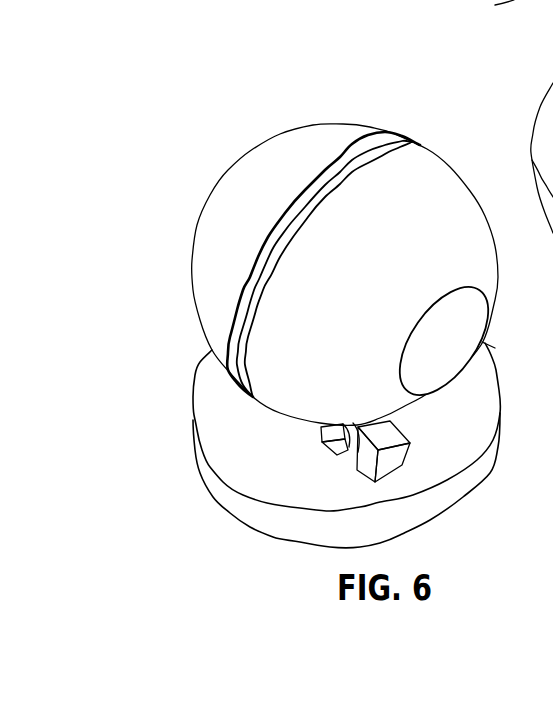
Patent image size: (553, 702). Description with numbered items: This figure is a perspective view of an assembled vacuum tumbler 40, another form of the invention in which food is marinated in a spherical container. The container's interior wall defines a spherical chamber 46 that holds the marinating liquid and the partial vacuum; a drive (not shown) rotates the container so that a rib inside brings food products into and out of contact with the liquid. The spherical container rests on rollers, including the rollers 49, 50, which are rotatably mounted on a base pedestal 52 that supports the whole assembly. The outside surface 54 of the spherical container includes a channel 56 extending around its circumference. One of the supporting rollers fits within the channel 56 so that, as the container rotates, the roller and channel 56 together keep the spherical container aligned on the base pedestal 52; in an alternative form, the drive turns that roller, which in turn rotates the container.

The vacuum tumbler 40 is at (178, 198).
The spherical chamber 46 is at (270, 178).
The outside surface 54 is at (314, 130).
The channel 56 is at (389, 134).
The base pedestal 52 is at (447, 440).
The roller 50 is at (337, 440).
The roller 49 is at (552, 55).